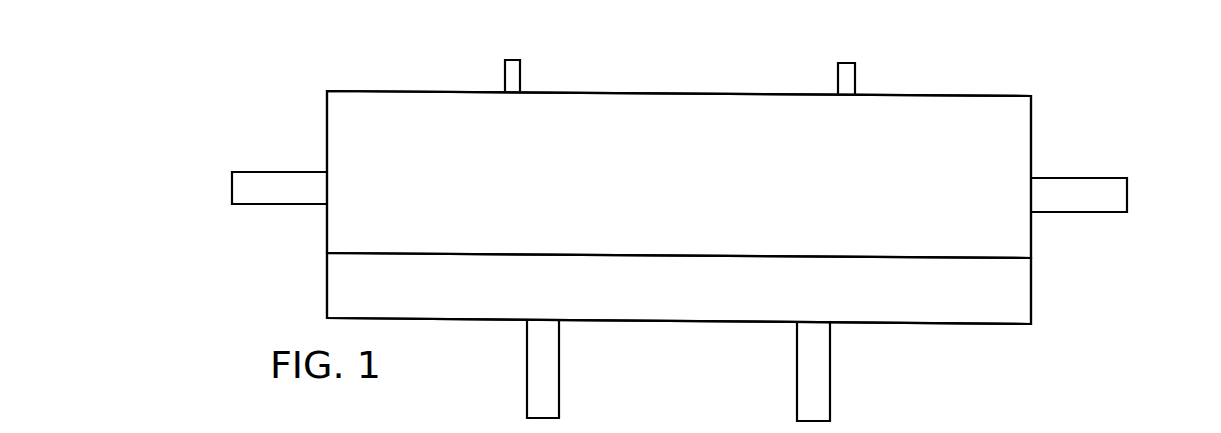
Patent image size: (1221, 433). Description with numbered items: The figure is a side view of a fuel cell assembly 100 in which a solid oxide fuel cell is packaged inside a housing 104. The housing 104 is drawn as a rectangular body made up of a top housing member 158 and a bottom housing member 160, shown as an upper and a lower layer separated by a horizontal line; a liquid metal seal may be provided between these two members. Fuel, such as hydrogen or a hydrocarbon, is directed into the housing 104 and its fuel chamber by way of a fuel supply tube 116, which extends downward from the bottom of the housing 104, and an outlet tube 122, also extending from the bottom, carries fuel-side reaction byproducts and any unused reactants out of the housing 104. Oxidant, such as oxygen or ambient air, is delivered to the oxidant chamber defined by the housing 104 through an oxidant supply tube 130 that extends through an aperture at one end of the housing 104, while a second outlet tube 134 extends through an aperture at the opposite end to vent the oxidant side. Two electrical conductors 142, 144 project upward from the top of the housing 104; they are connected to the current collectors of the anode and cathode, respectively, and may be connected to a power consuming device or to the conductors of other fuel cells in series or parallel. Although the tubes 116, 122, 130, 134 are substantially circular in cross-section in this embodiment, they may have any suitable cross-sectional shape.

The fuel cell assembly 100 is at (1097, 98).
The housing 104 is at (1016, 82).
The fuel supply tube 116 is at (527, 400).
The outlet tube 122 is at (797, 404).
The oxidant supply tube 130 is at (232, 188).
The outlet tube 134 is at (1128, 196).
The electrical conductor 142 is at (512, 60).
The electrical conductor 144 is at (848, 63).
The top housing member 158 is at (679, 174).
The bottom housing member 160 is at (679, 288).